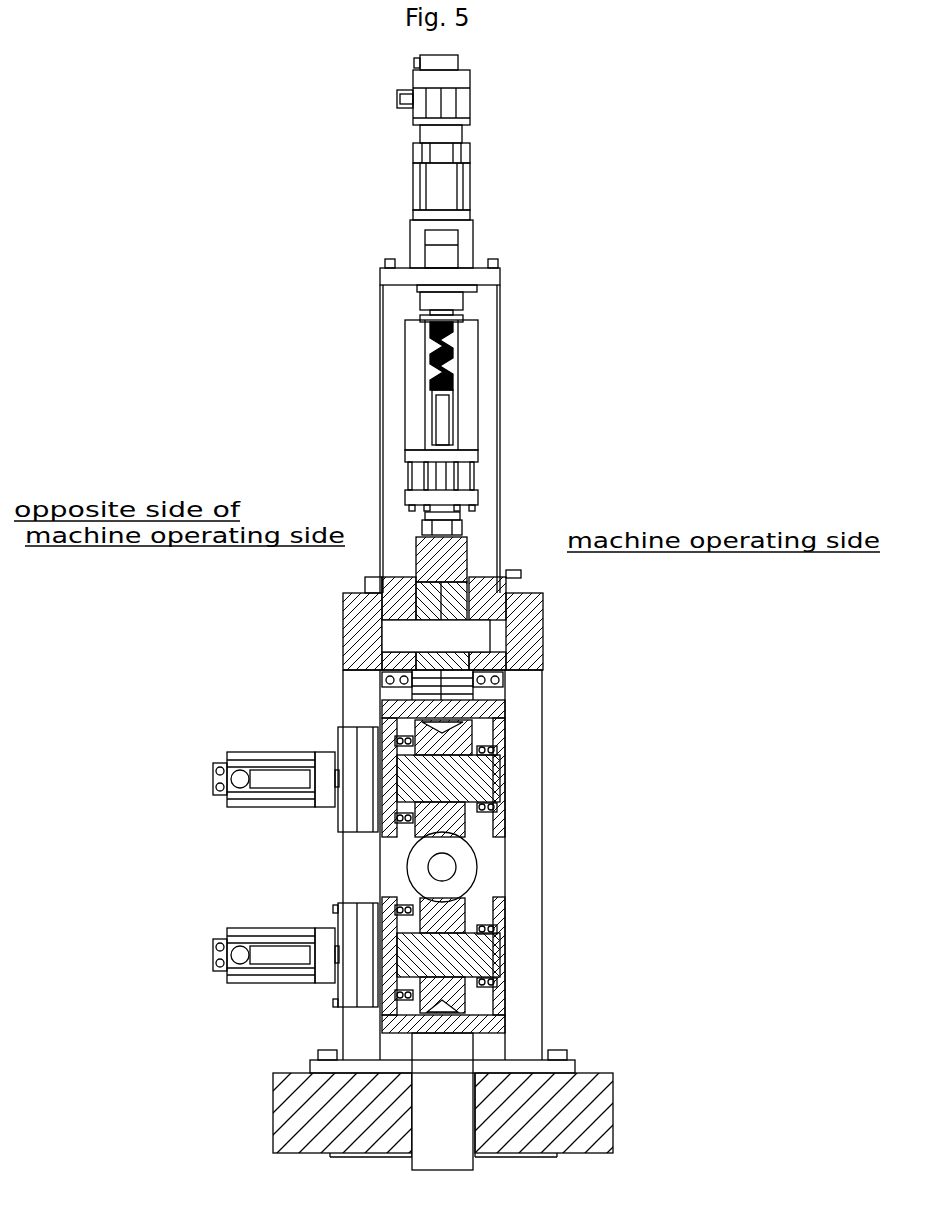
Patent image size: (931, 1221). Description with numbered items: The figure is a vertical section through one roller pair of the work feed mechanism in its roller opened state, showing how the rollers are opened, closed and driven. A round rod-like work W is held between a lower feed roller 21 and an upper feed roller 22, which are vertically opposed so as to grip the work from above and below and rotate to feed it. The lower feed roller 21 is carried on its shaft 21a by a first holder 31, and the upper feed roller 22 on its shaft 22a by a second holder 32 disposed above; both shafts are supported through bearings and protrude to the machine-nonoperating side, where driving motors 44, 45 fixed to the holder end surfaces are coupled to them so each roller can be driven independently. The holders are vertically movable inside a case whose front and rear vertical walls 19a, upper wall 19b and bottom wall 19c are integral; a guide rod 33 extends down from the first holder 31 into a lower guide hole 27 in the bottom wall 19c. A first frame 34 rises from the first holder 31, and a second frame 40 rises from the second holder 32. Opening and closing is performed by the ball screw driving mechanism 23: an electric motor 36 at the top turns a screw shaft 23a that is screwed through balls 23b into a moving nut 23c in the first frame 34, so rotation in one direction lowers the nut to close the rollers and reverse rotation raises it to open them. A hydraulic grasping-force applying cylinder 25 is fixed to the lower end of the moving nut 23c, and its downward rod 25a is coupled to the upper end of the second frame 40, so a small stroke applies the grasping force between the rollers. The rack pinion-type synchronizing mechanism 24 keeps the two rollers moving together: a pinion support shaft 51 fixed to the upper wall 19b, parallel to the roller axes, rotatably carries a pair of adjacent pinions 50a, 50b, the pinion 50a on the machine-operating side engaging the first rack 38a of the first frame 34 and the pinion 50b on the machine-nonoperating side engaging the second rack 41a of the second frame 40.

The electric motor 36 is at (440, 190).
The first frame 34 is at (385, 312).
The ball screw driving mechanism 23 is at (370, 378).
The screw shaft 23a is at (455, 303).
The balls 23b is at (452, 366).
The moving nut 23c is at (452, 424).
The grasping-force applying cylinder 25 is at (425, 475).
The rod 25a is at (413, 508).
The second frame 40 is at (450, 550).
The pinion on the machine-operating side 50a is at (480, 590).
The pinion on the machine-nonoperating side 50b is at (394, 590).
The upper wall 19b is at (365, 632).
The pinion support shaft 51 is at (462, 635).
The rack pinion-type synchronizing mechanism 24 is at (470, 680).
The second rack on the front side 41a is at (420, 685).
The first rack on the front side 38a is at (457, 687).
The driving motor 45 is at (228, 753).
The second holder 32 is at (507, 748).
The shaft of the upper feed roller 22a is at (455, 783).
The upper feed roller 22 is at (455, 822).
The work W is at (430, 870).
The driving motor 44 is at (243, 947).
The vertical walls 19a is at (363, 893).
The lower feed roller 21 is at (450, 912).
The shaft of the lower feed roller 21a is at (470, 960).
The first holder 31 is at (475, 1025).
The bottom wall 19c is at (318, 1120).
The lower guide hole 27 is at (412, 1110).
The guide rod 33 is at (443, 1130).